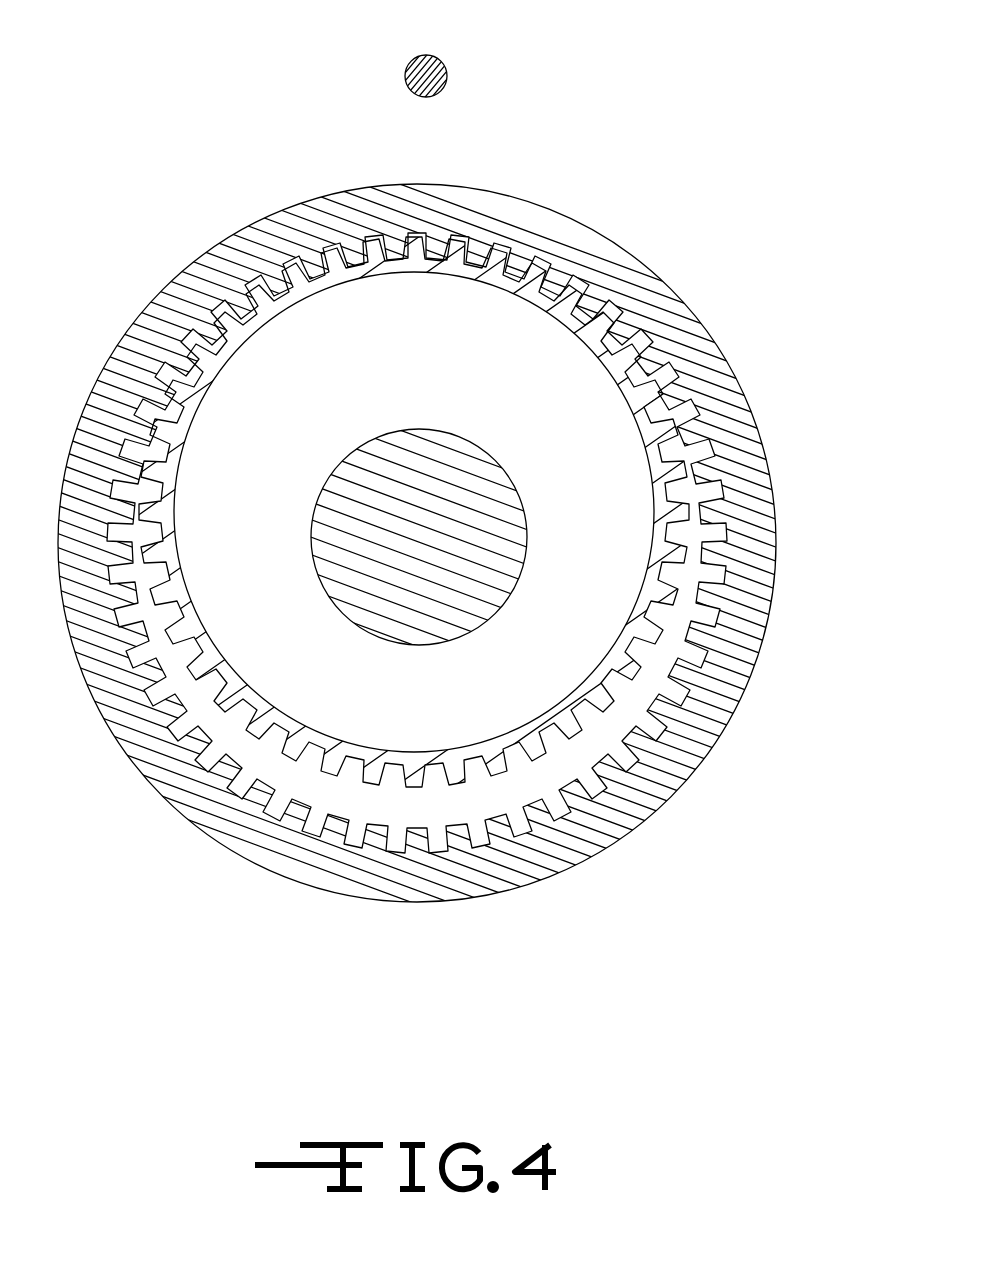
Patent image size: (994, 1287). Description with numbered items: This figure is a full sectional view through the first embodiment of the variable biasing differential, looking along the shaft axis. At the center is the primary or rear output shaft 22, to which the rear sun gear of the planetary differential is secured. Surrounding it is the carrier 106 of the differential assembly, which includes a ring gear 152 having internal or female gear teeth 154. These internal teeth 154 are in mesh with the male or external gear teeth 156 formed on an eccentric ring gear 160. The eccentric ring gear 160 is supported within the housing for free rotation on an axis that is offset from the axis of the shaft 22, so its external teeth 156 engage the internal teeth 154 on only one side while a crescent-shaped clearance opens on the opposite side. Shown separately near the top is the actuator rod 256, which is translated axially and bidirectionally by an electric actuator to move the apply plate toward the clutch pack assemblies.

The primary or rear output shaft 22 is at (437, 503).
The carrier 106 is at (742, 386).
The ring gear 152 is at (610, 272).
The internal or female gear teeth 154 is at (672, 687).
The male or external gear teeth 156 is at (532, 735).
The eccentric ring gear 160 is at (260, 706).
The actuator rod 256 is at (447, 82).